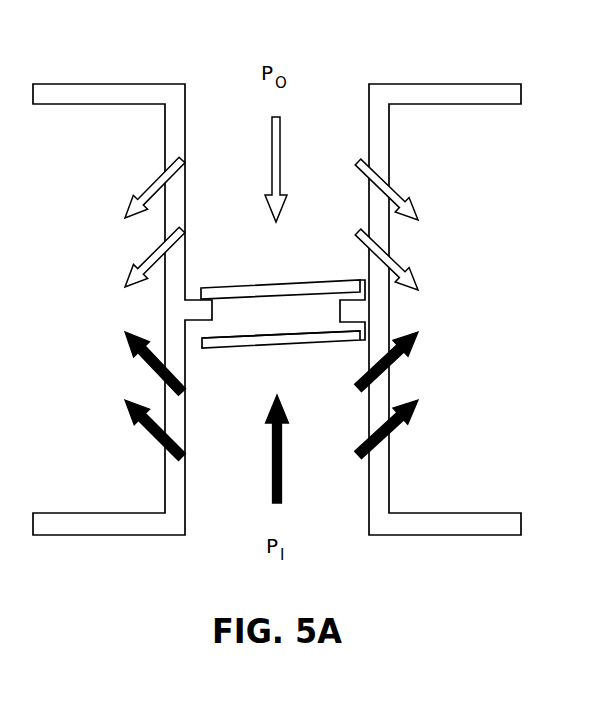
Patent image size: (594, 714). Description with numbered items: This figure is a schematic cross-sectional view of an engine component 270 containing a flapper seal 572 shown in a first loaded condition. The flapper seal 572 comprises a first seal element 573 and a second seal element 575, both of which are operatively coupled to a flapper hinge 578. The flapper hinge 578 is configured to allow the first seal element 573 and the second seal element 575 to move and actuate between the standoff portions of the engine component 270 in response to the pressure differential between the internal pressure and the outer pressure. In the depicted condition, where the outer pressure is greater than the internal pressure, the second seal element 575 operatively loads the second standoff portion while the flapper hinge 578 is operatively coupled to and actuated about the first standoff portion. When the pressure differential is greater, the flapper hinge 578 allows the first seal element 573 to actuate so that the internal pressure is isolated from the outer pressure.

The engine component 270 is at (462, 83).
The second seal element 575 is at (280, 288).
The flapper seal 572 is at (245, 350).
The first seal element 573 is at (289, 340).
The flapper hinge 578 is at (362, 295).